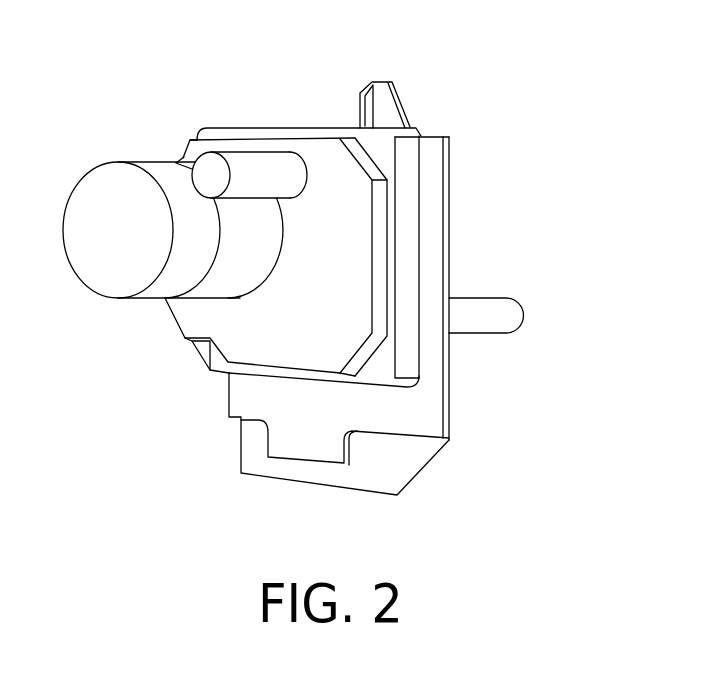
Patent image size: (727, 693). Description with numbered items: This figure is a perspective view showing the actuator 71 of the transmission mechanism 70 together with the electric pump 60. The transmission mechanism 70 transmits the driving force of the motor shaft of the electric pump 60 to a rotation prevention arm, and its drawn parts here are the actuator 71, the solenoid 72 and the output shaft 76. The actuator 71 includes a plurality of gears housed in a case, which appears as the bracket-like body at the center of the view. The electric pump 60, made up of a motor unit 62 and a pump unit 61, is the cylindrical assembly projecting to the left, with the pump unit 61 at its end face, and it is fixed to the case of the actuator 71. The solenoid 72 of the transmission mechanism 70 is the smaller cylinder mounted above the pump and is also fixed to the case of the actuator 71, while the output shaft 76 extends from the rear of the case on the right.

The electric pump 60 is at (173, 223).
The pump unit 61 is at (105, 300).
The motor unit 62 is at (217, 298).
The transmission mechanism 70 is at (367, 270).
The actuator 71 is at (295, 127).
The solenoid 72 is at (240, 151).
The output shaft 76 is at (490, 334).